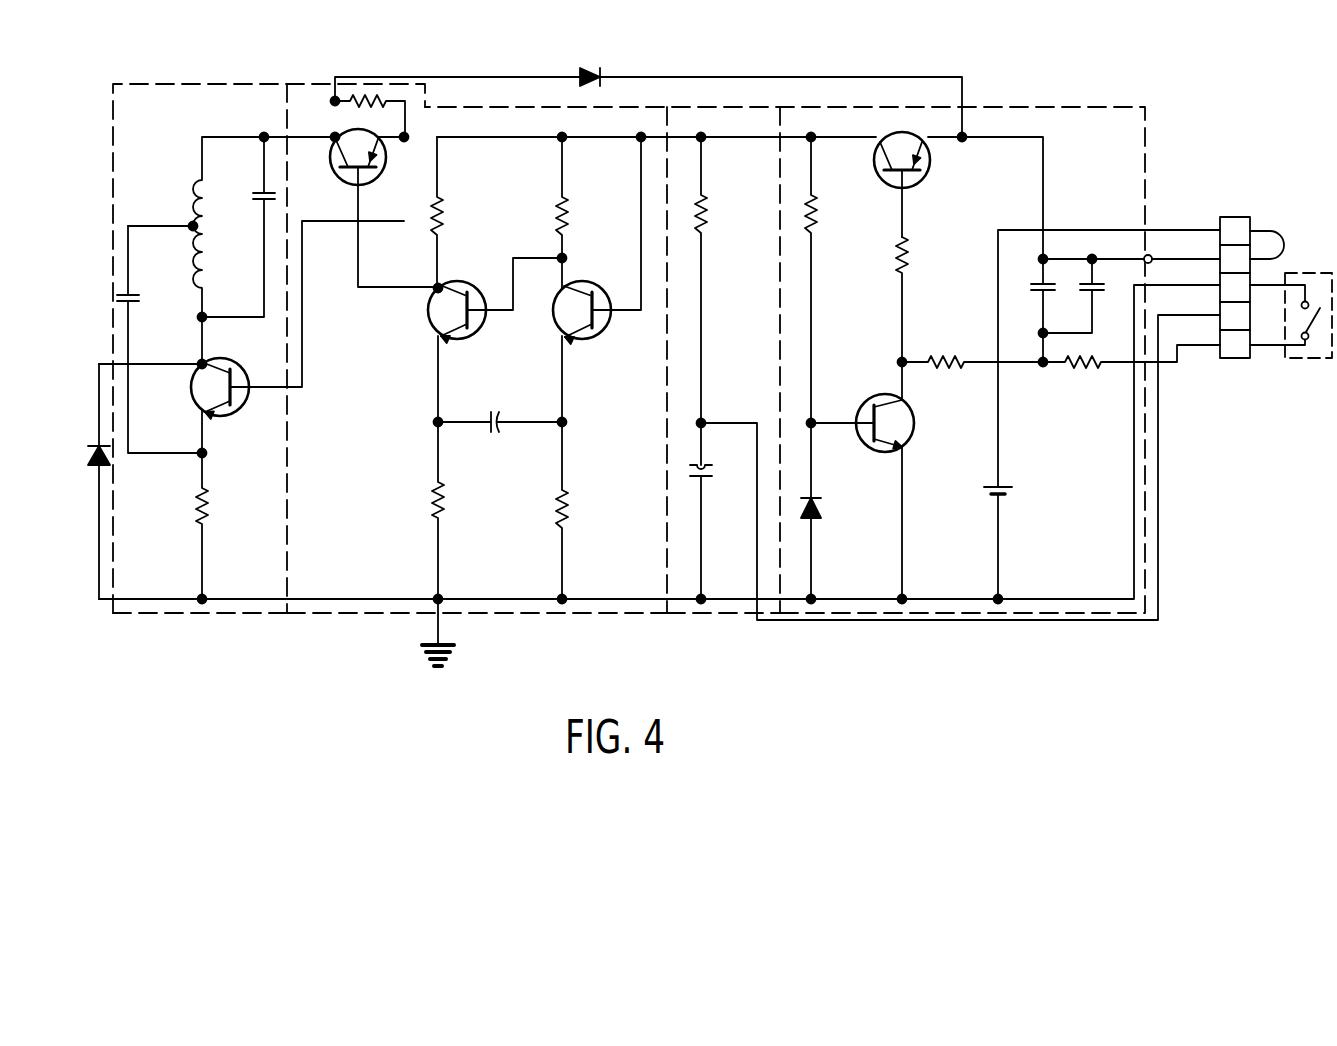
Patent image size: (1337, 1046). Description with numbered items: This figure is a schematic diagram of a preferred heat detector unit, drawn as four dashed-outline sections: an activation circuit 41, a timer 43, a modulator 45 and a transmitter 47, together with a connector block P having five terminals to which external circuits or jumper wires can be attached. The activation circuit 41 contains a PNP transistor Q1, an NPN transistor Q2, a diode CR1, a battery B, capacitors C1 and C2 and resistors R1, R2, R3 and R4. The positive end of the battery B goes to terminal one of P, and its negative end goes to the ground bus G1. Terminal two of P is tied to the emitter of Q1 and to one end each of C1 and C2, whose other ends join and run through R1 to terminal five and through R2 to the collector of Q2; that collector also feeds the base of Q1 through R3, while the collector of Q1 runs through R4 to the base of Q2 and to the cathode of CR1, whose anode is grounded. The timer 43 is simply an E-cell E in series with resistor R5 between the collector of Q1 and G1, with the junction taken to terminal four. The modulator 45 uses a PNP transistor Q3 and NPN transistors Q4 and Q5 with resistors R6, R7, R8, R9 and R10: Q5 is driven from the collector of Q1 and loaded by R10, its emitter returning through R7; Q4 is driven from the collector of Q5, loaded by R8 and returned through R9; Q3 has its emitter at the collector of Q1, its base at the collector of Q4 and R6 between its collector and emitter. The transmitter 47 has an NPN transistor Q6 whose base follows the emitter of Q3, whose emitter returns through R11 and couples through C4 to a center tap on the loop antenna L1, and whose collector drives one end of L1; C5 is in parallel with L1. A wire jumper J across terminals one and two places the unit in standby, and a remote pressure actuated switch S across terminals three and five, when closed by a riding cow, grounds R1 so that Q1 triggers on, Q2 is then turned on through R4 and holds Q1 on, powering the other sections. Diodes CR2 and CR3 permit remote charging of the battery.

The resistor R1 is at (1130, 370).
The resistor R2 is at (972, 376).
The resistor R3 is at (917, 318).
The resistor R4 is at (826, 280).
The resistor R5 is at (716, 280).
The resistor R6 is at (370, 93).
The resistor R7 is at (577, 511).
The resistor R8 is at (451, 212).
The resistor R9 is at (449, 542).
The resistor R10 is at (582, 212).
The resistor R11 is at (223, 528).
The capacitor C1 is at (1051, 250).
The capacitor C2 is at (1131, 294).
The capacitor C4 is at (159, 339).
The capacitor C5 is at (238, 225).
The diode CR1 is at (833, 511).
The diode CR2 is at (648, 92).
The diode CR3 is at (78, 481).
The PNP transistor Q1 is at (917, 184).
The NPN transistor Q2 is at (862, 489).
The PNP transistor Q3 is at (351, 208).
The NPN transistor Q4 is at (497, 338).
The NPN transistor Q5 is at (597, 279).
The NPN transistor Q6 is at (251, 339).
The loop antenna L1 is at (196, 250).
The E-cell E is at (712, 513).
The battery B is at (1102, 417).
The connector block P is at (1224, 207).
The wire jumper J is at (1280, 230).
The pressure actuated switch S is at (1318, 360).
The ground bus G1 is at (878, 600).
The activation circuit 41 is at (1036, 585).
The timer 43 is at (720, 585).
The modulator 45 is at (508, 587).
The transmitter 47 is at (243, 587).